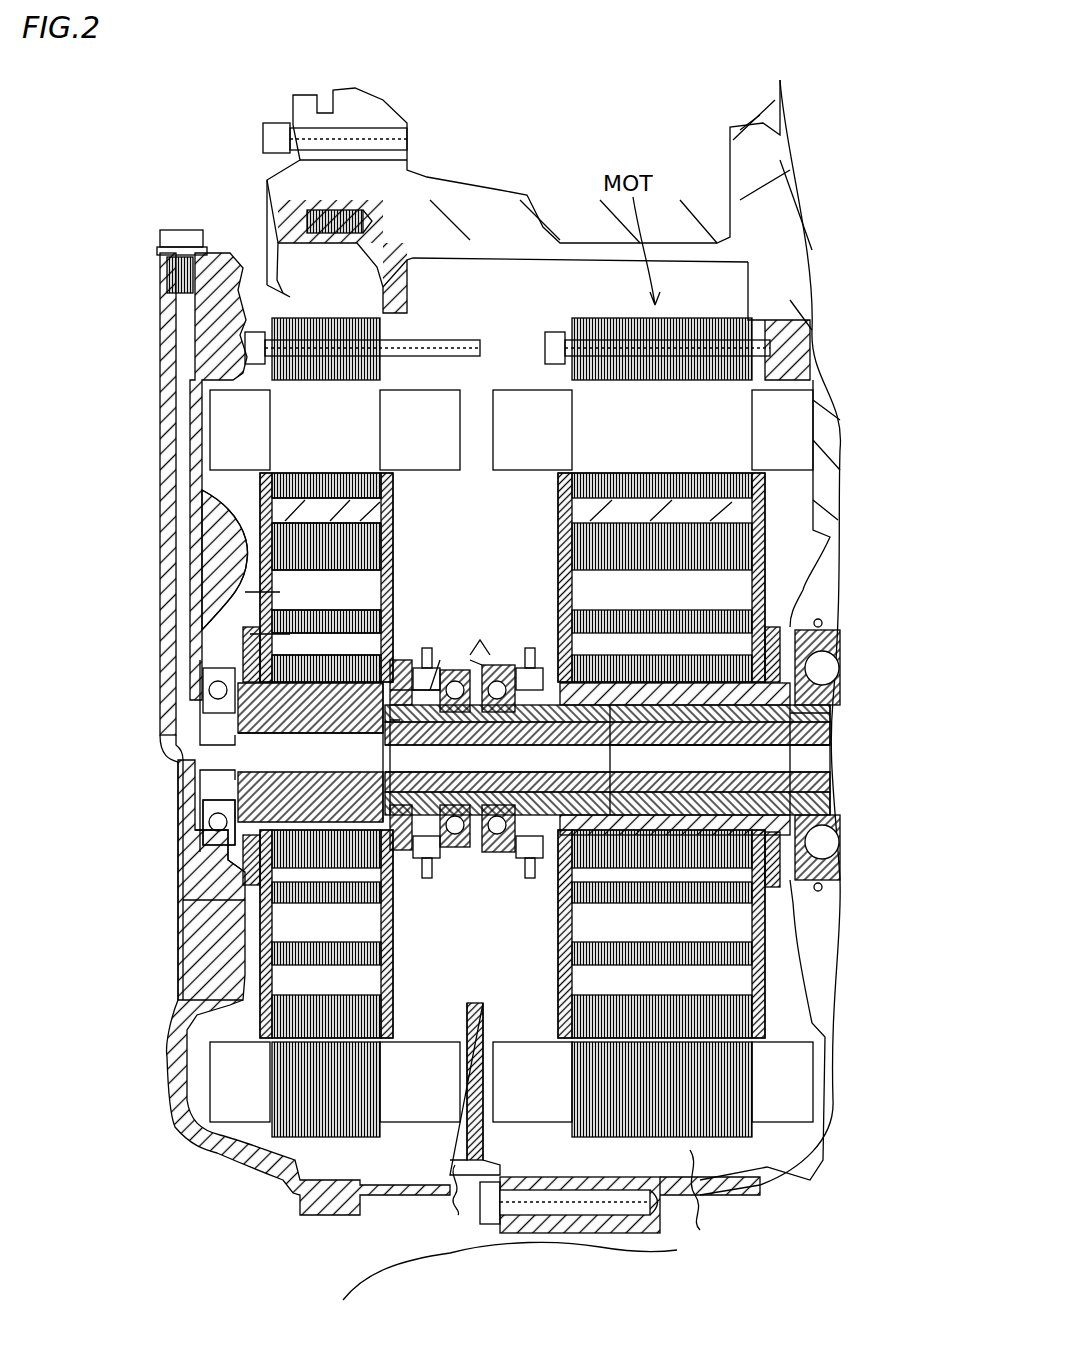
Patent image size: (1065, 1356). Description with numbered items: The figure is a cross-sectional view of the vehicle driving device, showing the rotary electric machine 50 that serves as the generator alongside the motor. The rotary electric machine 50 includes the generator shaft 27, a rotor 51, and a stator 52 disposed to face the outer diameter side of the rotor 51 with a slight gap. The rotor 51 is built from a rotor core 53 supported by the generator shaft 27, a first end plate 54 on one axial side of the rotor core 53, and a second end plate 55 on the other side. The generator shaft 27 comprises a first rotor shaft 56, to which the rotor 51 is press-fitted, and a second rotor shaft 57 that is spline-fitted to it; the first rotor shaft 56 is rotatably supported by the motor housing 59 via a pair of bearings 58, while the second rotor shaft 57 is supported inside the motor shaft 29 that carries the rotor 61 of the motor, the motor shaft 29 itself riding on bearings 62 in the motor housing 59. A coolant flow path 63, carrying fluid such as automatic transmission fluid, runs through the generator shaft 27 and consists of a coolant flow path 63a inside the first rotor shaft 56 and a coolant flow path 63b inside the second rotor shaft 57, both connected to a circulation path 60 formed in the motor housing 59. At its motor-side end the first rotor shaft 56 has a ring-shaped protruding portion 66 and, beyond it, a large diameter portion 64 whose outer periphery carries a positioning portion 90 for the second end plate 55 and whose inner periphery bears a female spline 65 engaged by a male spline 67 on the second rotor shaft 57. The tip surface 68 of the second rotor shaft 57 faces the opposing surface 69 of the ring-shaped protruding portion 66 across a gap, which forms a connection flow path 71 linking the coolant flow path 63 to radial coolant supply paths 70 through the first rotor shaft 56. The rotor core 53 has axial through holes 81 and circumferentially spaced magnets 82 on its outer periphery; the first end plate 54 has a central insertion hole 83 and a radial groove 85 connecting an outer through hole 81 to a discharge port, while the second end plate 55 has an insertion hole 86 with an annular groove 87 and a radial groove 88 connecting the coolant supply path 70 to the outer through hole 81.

The generator shaft 27 is at (210, 752).
The motor shaft 29 is at (830, 712).
The rotary electric machine 50 is at (302, 300).
The rotor 51 is at (285, 727).
The stator 52 is at (187, 419).
The rotor core 53 is at (197, 527).
The first end plate 54 is at (190, 548).
The second end plate 55 is at (383, 540).
The first rotor shaft 56 is at (250, 737).
The second rotor shaft 57 is at (245, 778).
The bearings 58 is at (470, 860).
The motor housing 59 is at (200, 1005).
The circulation path 60 is at (183, 346).
The rotor 61 is at (784, 566).
The bearings 62 is at (497, 862).
The coolant flow path 63 is at (483, 775).
The coolant flow path 63a is at (215, 802).
The coolant flow path 63b is at (820, 758).
The large diameter portion 64 is at (405, 855).
The female spline 65 is at (520, 670).
The ring-shaped protruding portion 66 is at (262, 898).
The male spline 67 is at (482, 665).
The tip surface 68 is at (470, 735).
The opposing surface 69 is at (452, 662).
The coolant supply path 70 is at (310, 746).
The connection flow path 71 is at (360, 750).
The through holes 81 is at (290, 634).
The magnets 82 is at (383, 505).
The insertion hole 83 is at (205, 702).
The radial groove 85 is at (280, 592).
The insertion hole 86 is at (403, 665).
The annular groove 87 is at (397, 650).
The radial groove 88 is at (360, 605).
The positioning portion 90 is at (380, 890).